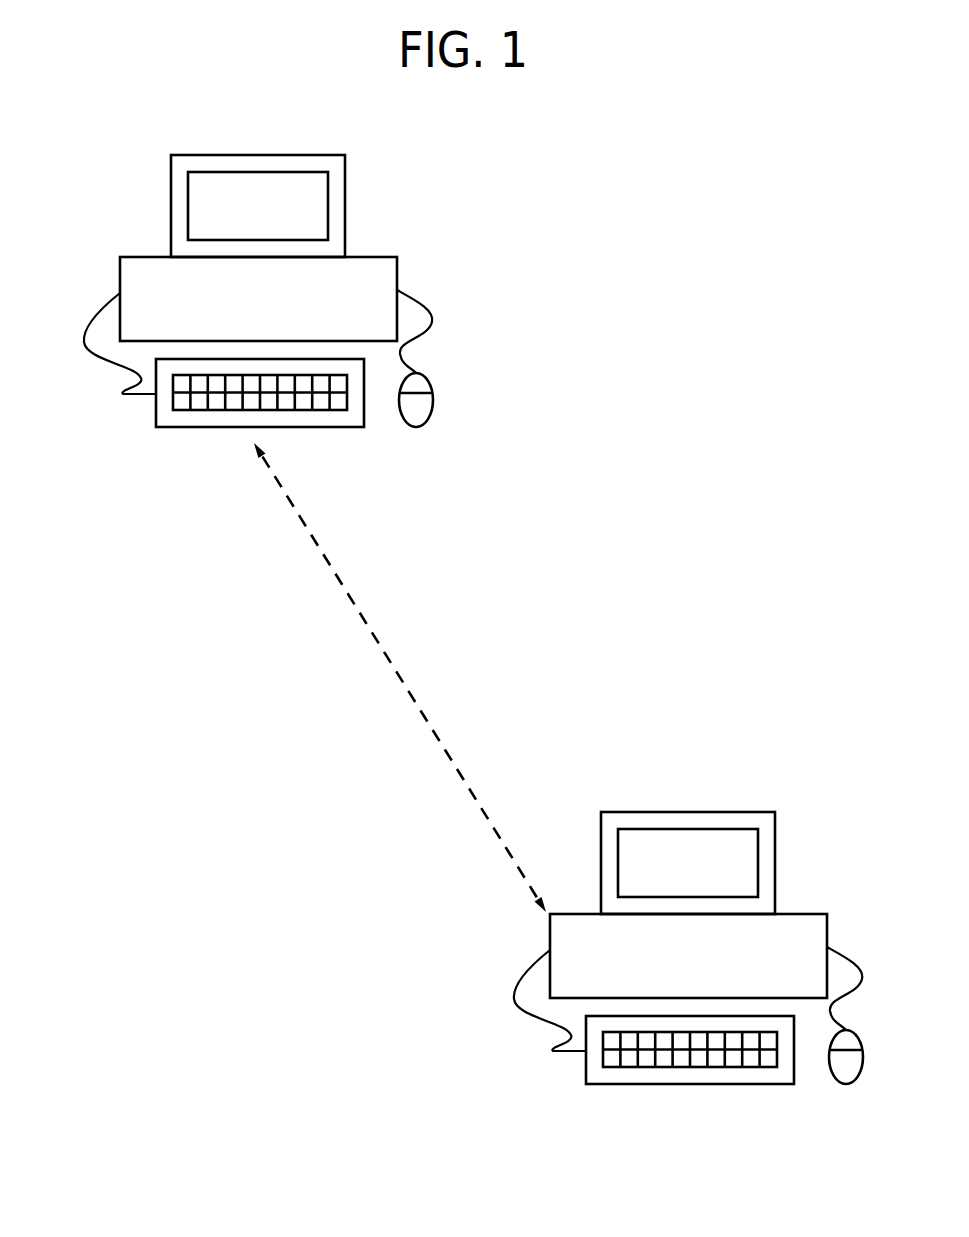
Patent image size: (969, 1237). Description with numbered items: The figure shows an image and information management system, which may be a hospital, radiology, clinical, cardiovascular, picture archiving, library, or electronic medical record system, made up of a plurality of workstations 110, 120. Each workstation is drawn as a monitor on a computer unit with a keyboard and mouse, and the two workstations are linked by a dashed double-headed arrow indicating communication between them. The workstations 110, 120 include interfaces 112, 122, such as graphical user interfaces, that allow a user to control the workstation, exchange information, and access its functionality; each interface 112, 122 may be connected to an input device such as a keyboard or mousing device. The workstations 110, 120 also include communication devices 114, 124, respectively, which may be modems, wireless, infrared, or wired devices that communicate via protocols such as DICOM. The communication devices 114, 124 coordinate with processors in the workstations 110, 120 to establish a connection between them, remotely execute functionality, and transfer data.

The workstation 110 is at (273, 269).
The interface 112 is at (313, 207).
The communication device 114 is at (373, 277).
The workstation 120 is at (699, 922).
The interface 122 is at (742, 863).
The communication device 124 is at (805, 937).